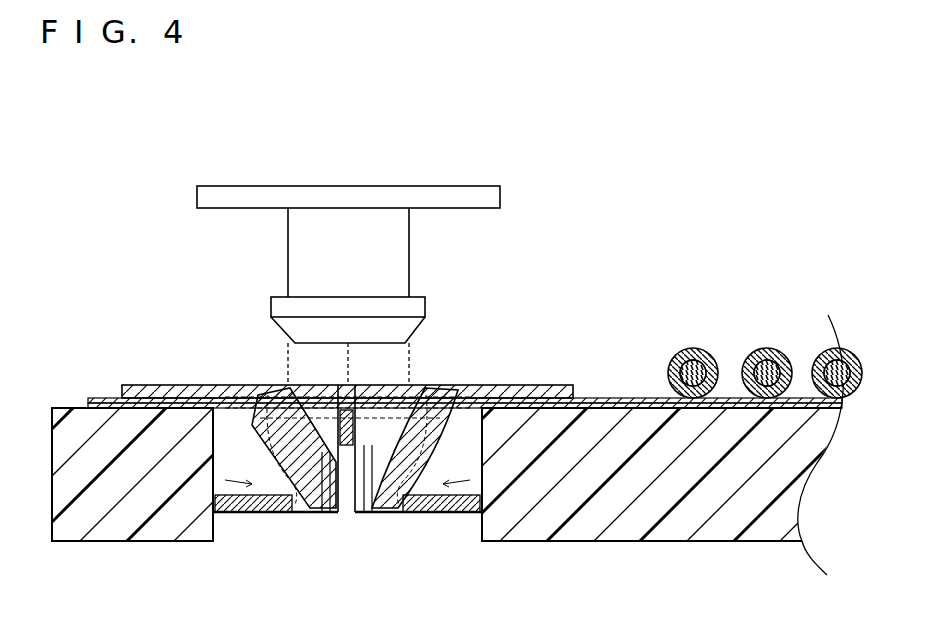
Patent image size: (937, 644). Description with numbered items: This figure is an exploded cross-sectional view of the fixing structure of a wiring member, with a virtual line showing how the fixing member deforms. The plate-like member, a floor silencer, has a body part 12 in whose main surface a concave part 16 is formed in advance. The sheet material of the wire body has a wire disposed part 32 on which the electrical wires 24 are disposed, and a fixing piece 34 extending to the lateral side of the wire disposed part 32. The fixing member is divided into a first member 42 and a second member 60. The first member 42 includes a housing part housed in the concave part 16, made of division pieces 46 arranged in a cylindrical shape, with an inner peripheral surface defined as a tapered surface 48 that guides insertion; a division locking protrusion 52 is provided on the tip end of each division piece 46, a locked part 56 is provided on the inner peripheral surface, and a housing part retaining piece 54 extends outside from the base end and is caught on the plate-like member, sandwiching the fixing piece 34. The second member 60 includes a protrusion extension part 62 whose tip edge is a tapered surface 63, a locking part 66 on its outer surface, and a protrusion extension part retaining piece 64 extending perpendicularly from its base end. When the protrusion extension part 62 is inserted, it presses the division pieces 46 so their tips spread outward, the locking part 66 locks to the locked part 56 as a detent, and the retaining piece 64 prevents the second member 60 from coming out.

The body part 12 is at (62, 491).
The concave part 16 is at (222, 520).
The wire-like transmission member 24 is at (752, 354).
The wire disposed part 32 is at (644, 398).
The fixing piece 34 is at (100, 403).
The first member 42 is at (558, 381).
The division piece 46 is at (455, 400).
The tapered surface 48 is at (313, 400).
The division locking protrusion 52 is at (256, 515).
The housing part retaining piece 54 is at (138, 385).
The locked part 56 is at (373, 400).
The second member 60 is at (348, 247).
The protrusion extension part 62 is at (300, 253).
The tapered surface 63 is at (282, 326).
The protrusion extension part retaining piece 64 is at (245, 193).
The locking part 66 is at (275, 307).